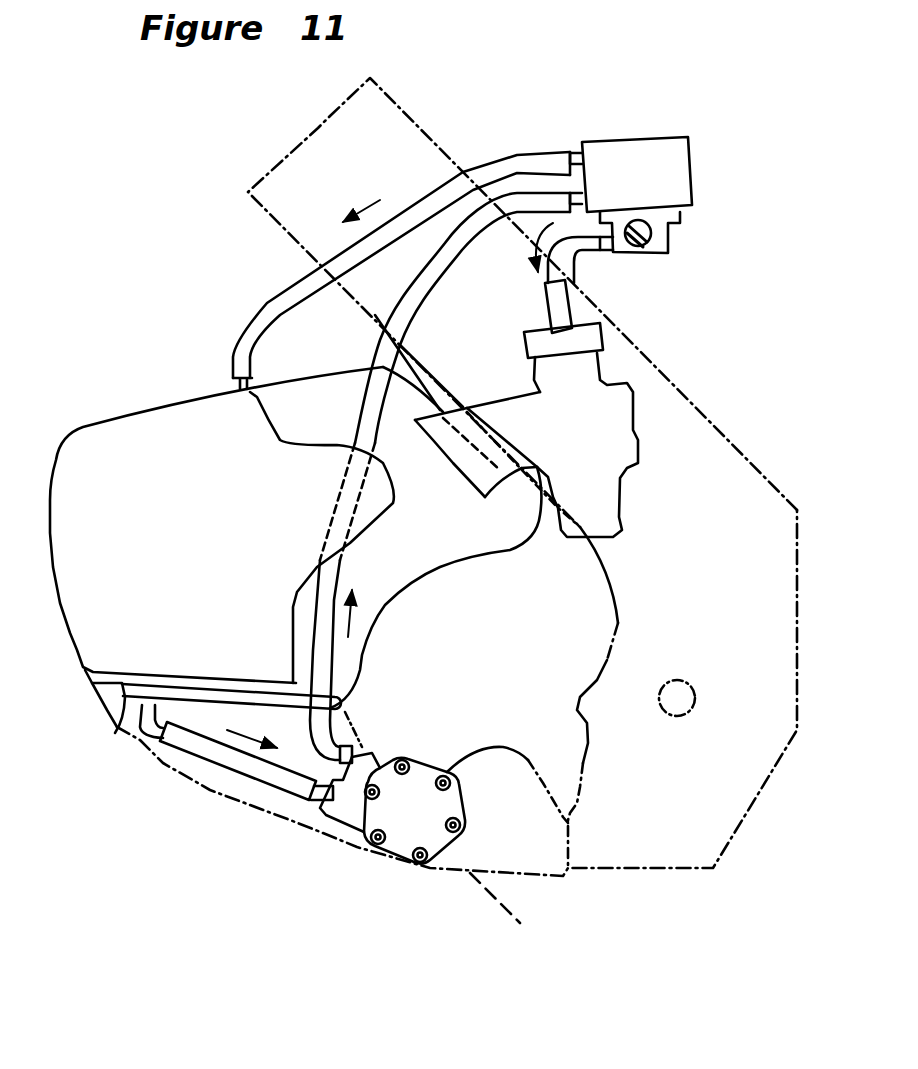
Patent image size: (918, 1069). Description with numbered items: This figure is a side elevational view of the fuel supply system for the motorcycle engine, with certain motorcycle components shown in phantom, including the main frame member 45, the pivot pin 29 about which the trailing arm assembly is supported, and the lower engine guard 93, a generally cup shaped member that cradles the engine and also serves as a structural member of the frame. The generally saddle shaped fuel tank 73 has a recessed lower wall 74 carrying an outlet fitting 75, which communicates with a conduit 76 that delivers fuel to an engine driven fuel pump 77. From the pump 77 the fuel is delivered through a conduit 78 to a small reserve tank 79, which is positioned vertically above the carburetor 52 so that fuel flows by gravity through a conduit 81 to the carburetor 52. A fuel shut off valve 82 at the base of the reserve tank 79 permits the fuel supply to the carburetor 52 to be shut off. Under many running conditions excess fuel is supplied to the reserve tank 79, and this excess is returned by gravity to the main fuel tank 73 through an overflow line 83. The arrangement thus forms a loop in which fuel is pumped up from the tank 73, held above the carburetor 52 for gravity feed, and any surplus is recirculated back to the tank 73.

The pivot pin 29 is at (678, 716).
The main frame member 45 is at (440, 95).
The cylinder block 52 is at (605, 505).
The fuel tank 73 is at (148, 402).
The recessed lower wall 74 is at (115, 733).
The outlet fitting 75 is at (148, 733).
The conduit 76 is at (263, 768).
The engine driven fuel pump 77 is at (360, 813).
The conduit 78 is at (418, 287).
The reserve tank 79 is at (645, 157).
The conduit 81 is at (582, 252).
The fuel shut off valve 82 is at (672, 243).
The overflow line 83 is at (280, 305).
The lower engine guard 93 is at (520, 923).